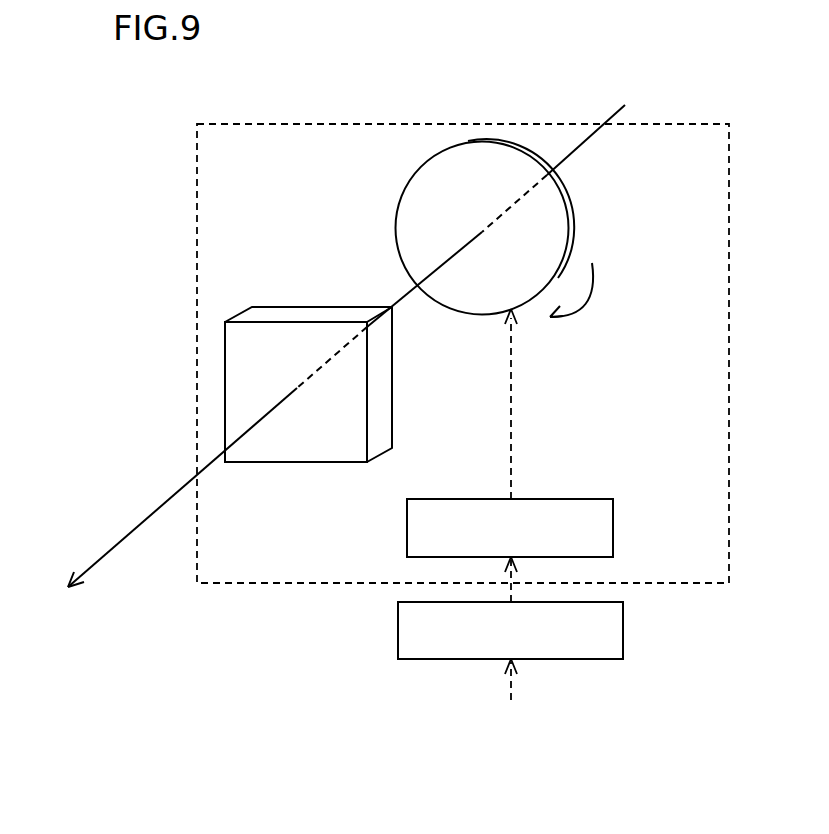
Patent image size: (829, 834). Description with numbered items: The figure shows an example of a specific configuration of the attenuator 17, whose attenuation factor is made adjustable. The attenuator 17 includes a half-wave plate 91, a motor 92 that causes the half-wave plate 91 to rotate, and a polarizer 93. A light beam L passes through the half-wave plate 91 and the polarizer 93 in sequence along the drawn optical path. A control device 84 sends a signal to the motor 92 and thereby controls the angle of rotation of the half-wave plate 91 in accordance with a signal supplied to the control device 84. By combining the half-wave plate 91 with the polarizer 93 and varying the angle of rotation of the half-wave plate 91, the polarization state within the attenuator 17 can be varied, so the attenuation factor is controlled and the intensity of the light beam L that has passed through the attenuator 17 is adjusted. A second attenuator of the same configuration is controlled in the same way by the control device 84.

The attenuator 17 is at (253, 122).
The half-wave plate 91 is at (400, 203).
The motor 92 is at (600, 499).
The polarizer 93 is at (305, 318).
The control device 84 is at (623, 628).
The light beam L is at (137, 527).